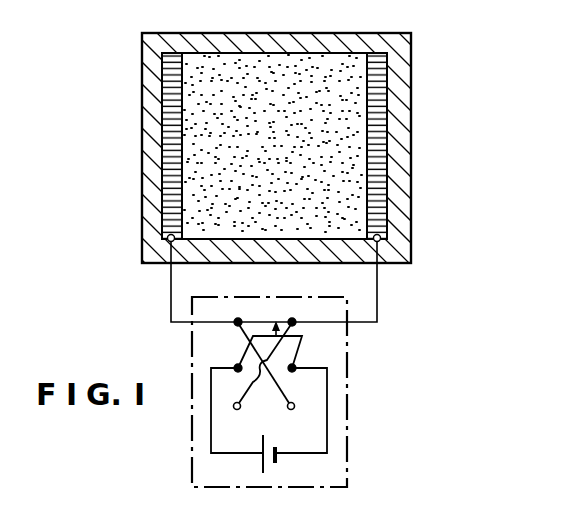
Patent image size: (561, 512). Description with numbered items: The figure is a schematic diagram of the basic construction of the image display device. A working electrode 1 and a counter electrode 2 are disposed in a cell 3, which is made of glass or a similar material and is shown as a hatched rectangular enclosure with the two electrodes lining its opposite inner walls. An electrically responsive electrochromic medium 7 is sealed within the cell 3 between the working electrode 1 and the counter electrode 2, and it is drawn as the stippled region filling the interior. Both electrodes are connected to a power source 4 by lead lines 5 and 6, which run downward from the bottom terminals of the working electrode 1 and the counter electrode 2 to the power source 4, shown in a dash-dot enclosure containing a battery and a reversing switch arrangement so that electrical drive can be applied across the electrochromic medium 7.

The working electrode 1 is at (168, 116).
The counter electrode 2 is at (380, 110).
The cell 3 is at (426, 61).
The power source 4 is at (344, 457).
The lead line 5 is at (163, 297).
The lead line 6 is at (383, 302).
The electrochromic medium 7 is at (265, 75).